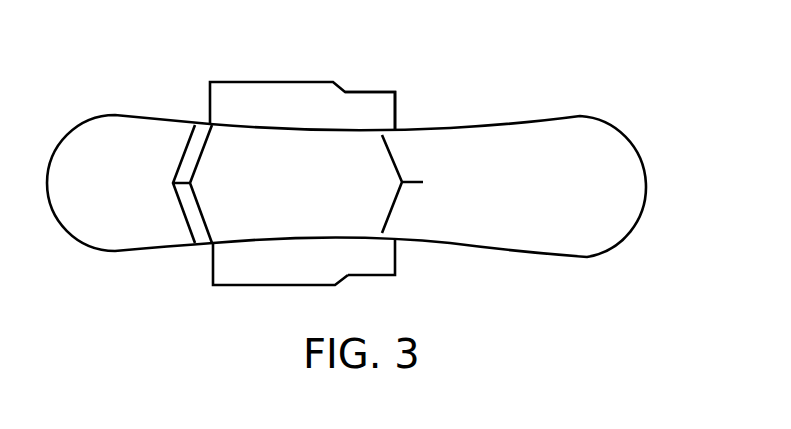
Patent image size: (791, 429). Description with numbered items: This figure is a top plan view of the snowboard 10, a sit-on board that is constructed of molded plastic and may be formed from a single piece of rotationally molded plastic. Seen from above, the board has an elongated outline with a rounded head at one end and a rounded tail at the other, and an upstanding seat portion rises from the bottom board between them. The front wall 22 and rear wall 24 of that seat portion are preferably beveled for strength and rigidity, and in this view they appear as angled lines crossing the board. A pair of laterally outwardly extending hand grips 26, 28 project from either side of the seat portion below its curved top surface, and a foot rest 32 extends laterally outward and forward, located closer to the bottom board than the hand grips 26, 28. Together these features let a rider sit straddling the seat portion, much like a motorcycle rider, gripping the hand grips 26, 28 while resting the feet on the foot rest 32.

The snowboard 10 is at (611, 107).
The front wall 22 is at (398, 165).
The rear wall 24 is at (187, 153).
The hand grip 26 is at (257, 92).
The hand grip 28 is at (370, 98).
The foot rest 32 is at (370, 262).